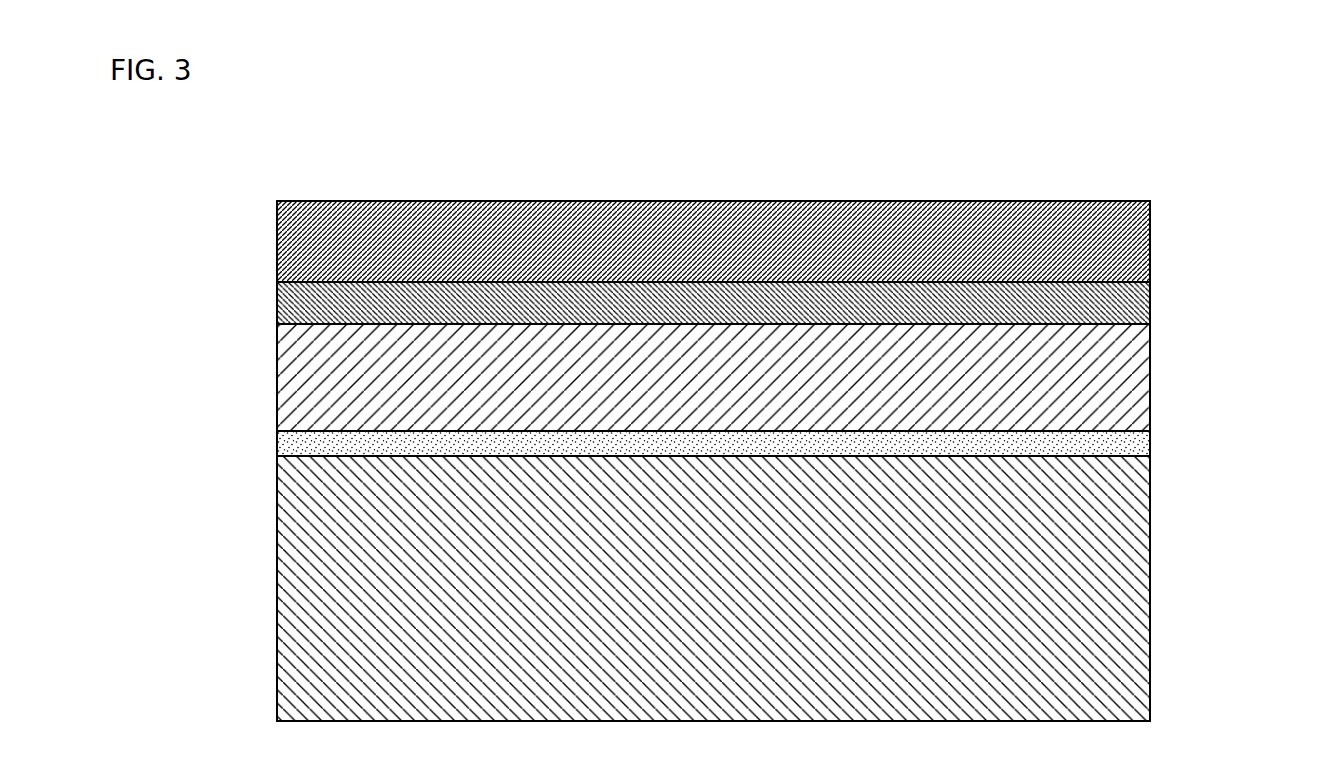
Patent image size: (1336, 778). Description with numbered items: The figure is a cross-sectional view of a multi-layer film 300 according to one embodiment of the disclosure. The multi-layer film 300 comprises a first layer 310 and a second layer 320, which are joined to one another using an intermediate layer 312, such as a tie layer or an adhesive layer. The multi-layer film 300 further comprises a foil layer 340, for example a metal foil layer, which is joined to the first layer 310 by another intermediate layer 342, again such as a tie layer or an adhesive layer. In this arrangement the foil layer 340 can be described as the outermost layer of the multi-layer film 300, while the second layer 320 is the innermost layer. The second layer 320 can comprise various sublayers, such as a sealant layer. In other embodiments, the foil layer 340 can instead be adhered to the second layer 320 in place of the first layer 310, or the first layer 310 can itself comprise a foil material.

The multi-layer film 300 is at (786, 399).
The foil layer 340 is at (1150, 242).
The intermediate layer 342 is at (1150, 298).
The first layer 310 is at (1150, 377).
The intermediate layer 312 is at (1150, 448).
The second layer 320 is at (1150, 562).